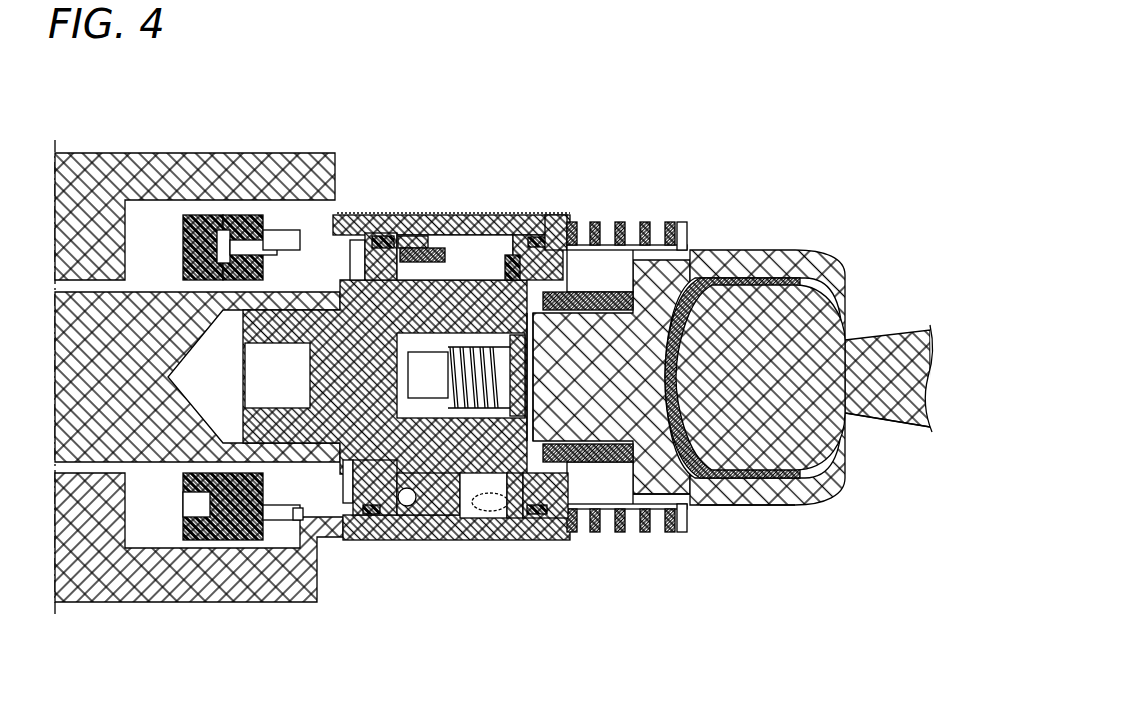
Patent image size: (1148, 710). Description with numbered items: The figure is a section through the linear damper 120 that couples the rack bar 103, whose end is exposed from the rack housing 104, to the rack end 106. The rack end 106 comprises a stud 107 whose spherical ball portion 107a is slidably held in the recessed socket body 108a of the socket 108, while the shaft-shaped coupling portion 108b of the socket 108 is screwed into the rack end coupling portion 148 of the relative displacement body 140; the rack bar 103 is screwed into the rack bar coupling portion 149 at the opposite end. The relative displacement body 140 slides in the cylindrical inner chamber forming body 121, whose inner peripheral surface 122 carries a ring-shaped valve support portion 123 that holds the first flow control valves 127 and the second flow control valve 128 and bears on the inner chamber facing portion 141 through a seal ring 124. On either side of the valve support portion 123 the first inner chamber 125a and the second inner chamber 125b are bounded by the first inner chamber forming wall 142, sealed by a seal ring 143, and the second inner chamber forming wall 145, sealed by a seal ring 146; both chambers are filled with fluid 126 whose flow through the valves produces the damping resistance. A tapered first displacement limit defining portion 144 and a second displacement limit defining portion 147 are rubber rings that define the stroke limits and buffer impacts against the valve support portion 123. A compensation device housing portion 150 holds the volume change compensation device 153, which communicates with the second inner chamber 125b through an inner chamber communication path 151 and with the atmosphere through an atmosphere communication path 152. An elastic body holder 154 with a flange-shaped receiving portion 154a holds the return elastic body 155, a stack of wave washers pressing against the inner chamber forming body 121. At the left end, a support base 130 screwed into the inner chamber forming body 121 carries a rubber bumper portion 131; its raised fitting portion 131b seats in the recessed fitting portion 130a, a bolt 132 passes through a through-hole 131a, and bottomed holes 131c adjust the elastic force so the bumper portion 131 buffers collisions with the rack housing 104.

The rack bar 103 is at (150, 463).
The rack housing 104 is at (120, 603).
The rack end 106 is at (776, 377).
The stud 107 is at (876, 330).
The ball portion 107a is at (830, 460).
The socket 108 is at (822, 263).
The socket body 108a is at (779, 508).
The coupling portion 108b is at (610, 482).
The linear damper 120 is at (728, 183).
The inner chamber forming body 121 is at (535, 478).
The inner peripheral surface 122 is at (338, 245).
The valve support portion 123 is at (462, 519).
The seal ring 124 is at (400, 337).
The first inner chamber 125a is at (482, 240).
The second inner chamber 125b is at (372, 248).
The fluid 126 is at (490, 512).
The first flow control valves 127 is at (440, 248).
The second flow control valve 128 is at (430, 516).
The support base 130 is at (300, 243).
The fitting portion 130a is at (262, 522).
The bumper portion 131 is at (170, 525).
The through-hole 131a is at (197, 228).
The fitting portion 131b is at (260, 228).
The bottomed hole 131c is at (205, 517).
The bolt 132 is at (240, 243).
The relative displacement body 140 is at (651, 408).
The inner chamber facing portion 141 is at (507, 256).
The first inner chamber forming wall 142 is at (525, 250).
The seal ring 143 is at (535, 514).
The first displacement limit defining portion 144 is at (510, 519).
The second inner chamber forming wall 145 is at (345, 504).
The seal ring 146 is at (372, 515).
The second displacement limit defining portion 147 is at (405, 516).
The rack end coupling portion 148 is at (607, 300).
The rack bar coupling portion 149 is at (298, 522).
The compensation device housing portion 150 is at (417, 397).
The inner chamber communication path 151 is at (385, 238).
The atmosphere communication path 152 is at (558, 248).
The volume change compensation device 153 is at (420, 250).
The elastic body holder 154 is at (647, 533).
The receiving portion 154a is at (672, 535).
The return elastic body 155 is at (625, 292).